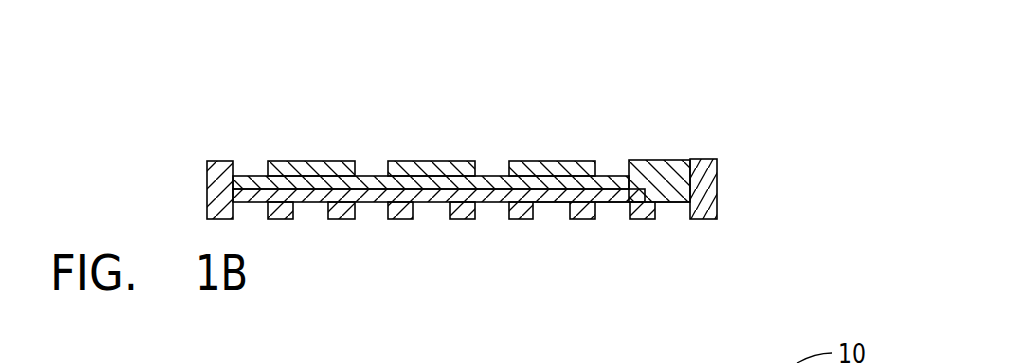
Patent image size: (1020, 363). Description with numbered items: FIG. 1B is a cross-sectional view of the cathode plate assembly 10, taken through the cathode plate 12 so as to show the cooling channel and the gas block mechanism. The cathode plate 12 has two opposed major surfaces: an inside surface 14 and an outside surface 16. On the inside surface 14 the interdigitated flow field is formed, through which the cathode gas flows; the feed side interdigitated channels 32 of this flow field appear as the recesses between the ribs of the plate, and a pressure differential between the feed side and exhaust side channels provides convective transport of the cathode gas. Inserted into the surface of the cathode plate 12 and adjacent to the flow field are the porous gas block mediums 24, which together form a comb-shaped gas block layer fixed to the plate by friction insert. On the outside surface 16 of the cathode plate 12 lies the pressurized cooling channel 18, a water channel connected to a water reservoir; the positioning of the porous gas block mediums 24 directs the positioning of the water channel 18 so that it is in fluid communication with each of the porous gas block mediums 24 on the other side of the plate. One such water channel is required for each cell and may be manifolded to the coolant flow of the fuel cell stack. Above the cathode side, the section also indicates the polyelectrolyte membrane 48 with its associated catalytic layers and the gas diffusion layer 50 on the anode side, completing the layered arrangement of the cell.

The cathode plate assembly 10 is at (775, 122).
The cathode plate 12 is at (222, 170).
The inside surface 14 is at (487, 185).
The outside surface 16 is at (372, 190).
The pressurized cooling channel 18 is at (672, 213).
The porous gas block mediums 24 is at (658, 178).
The feed side interdigitated channels 32 is at (552, 217).
The polyelectrolyte membrane 48 is at (308, 187).
The gas diffusion layer 50 is at (560, 175).